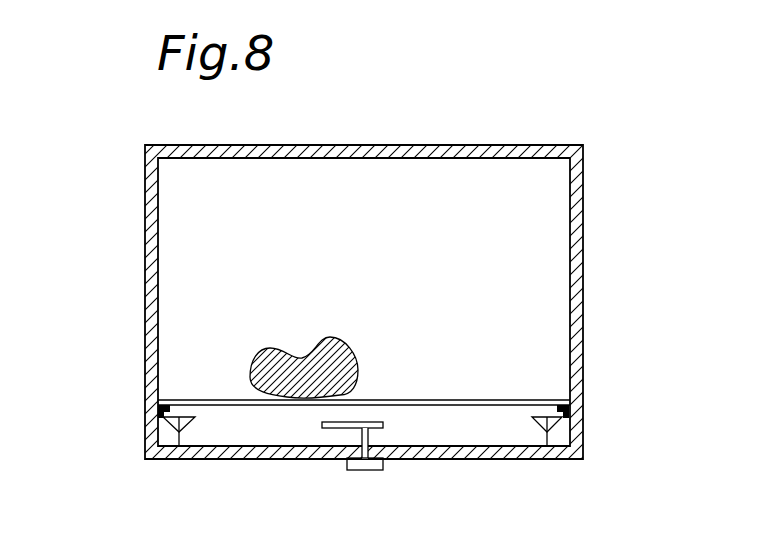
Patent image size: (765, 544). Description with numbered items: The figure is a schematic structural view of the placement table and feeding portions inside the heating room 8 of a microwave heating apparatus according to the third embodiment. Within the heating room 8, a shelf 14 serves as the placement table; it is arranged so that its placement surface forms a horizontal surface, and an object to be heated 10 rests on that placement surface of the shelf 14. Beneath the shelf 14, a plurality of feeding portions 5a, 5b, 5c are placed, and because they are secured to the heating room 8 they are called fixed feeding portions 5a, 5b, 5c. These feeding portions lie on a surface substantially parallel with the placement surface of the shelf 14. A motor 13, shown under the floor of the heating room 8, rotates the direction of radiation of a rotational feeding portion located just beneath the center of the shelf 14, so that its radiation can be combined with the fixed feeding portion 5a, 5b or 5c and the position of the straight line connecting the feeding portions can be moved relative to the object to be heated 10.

The heating room 8 is at (505, 146).
The object to be heated 10 is at (330, 337).
The shelf 14 is at (535, 399).
The fixed feeding portion 5a is at (172, 428).
The fixed feeding portion 5b is at (557, 427).
The fixed feeding portion 5c is at (384, 428).
The motor 13 is at (359, 466).